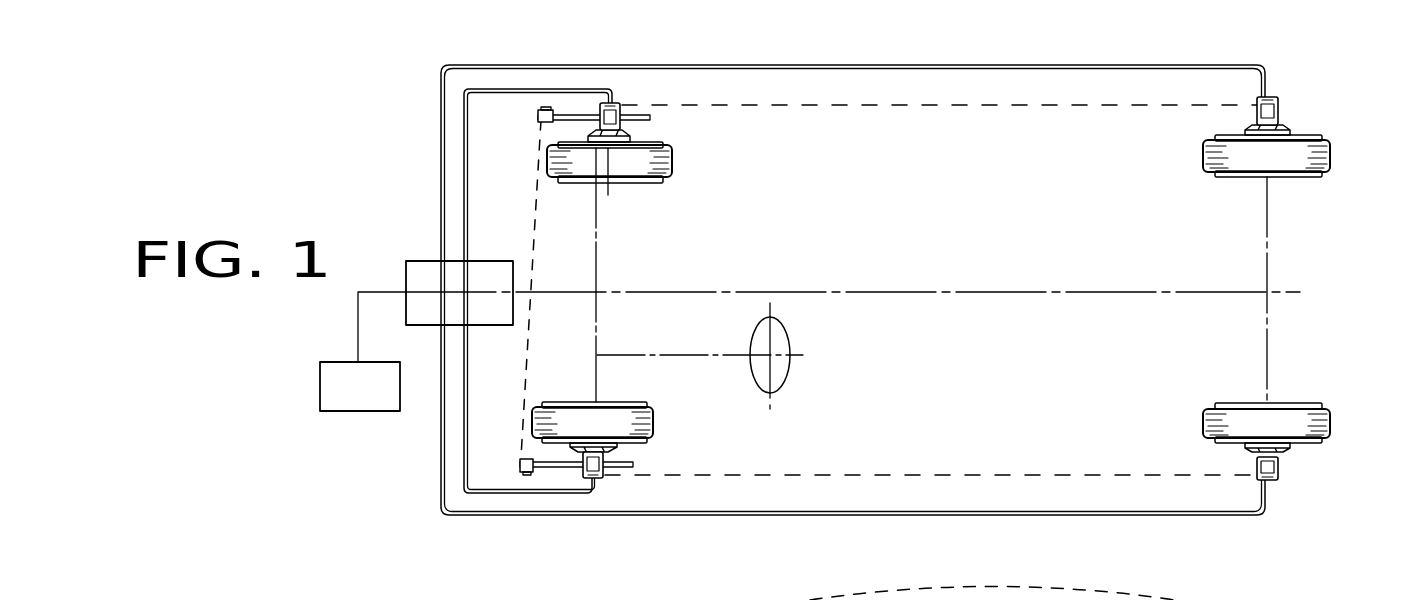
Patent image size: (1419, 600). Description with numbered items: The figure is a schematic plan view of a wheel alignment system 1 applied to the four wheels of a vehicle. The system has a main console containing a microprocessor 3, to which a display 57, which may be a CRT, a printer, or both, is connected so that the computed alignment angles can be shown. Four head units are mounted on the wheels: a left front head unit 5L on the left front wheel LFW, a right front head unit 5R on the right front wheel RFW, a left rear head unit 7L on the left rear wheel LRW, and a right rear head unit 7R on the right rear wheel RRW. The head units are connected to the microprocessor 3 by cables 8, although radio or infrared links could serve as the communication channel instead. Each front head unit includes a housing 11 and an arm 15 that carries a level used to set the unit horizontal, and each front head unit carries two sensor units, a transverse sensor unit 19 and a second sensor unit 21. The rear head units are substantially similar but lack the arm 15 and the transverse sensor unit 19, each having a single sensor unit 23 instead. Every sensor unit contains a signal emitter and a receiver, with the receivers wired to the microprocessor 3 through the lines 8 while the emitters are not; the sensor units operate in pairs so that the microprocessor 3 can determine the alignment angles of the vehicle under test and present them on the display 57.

The wheel alignment system 1 is at (1012, 48).
The microprocessor 3 is at (415, 272).
The right front head unit 5R is at (645, 129).
The left front head unit 5L is at (632, 451).
The right rear head unit 7R is at (1242, 119).
The left rear head unit 7L is at (1246, 464).
The cables 8 is at (842, 65).
The housing 11 is at (724, 542).
The arm 15 is at (573, 113).
The transverse sensor unit 19 is at (540, 110).
The sensor unit 21 is at (620, 103).
The rear sensor unit 23 is at (1257, 98).
The display 57 is at (357, 400).
The right front wheel RFW is at (663, 158).
The left front wheel LFW is at (642, 423).
The right rear wheel RRW is at (1215, 158).
The left rear wheel LRW is at (1215, 422).